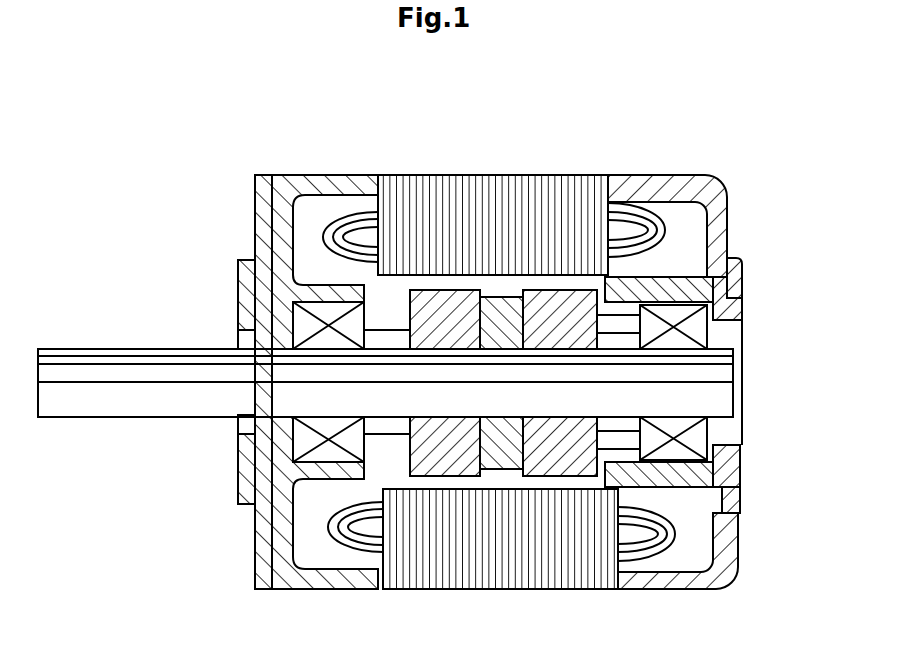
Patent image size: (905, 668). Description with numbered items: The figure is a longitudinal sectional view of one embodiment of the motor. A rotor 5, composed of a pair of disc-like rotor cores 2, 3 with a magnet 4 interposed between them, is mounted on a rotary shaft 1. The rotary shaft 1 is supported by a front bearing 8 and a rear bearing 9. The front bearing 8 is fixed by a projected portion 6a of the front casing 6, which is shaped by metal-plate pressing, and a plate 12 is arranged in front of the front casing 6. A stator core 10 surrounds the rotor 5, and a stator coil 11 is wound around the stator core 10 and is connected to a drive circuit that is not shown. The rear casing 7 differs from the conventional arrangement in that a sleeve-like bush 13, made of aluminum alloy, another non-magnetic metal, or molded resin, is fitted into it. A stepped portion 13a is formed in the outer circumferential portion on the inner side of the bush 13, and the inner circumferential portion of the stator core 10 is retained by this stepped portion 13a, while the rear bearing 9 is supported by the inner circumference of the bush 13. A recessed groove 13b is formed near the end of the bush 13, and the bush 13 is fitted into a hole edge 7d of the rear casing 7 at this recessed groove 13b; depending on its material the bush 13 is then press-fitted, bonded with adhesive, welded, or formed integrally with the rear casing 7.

The rotary shaft 1 is at (92, 348).
The rotor core 2 is at (400, 300).
The rotor core 3 is at (575, 318).
The magnet 4 is at (502, 297).
The rotor 5 is at (558, 285).
The front casing 6 is at (283, 192).
The projected portion 6a is at (238, 283).
The rear casing 7 is at (712, 197).
The hole edge 7d is at (740, 284).
The bearing 8 is at (305, 330).
The rear bearing 9 is at (680, 338).
The stator core 10 is at (463, 200).
The stator coil 11 is at (345, 215).
The plate 12 is at (252, 197).
The bush 13 is at (742, 306).
The stepped portion 13a is at (603, 272).
The recessed groove 13b is at (728, 260).